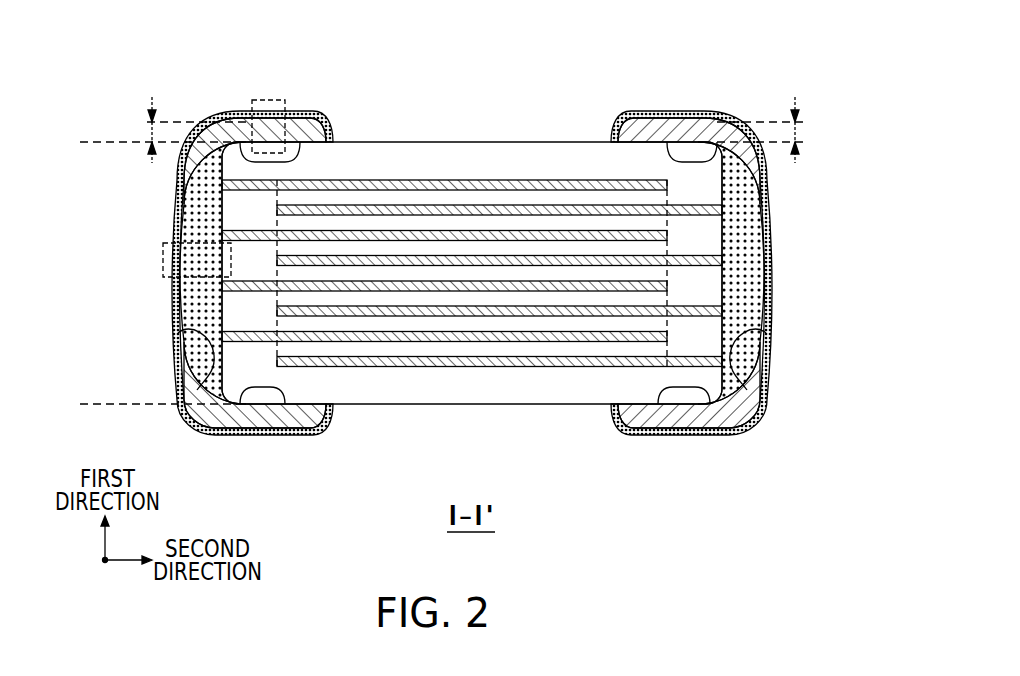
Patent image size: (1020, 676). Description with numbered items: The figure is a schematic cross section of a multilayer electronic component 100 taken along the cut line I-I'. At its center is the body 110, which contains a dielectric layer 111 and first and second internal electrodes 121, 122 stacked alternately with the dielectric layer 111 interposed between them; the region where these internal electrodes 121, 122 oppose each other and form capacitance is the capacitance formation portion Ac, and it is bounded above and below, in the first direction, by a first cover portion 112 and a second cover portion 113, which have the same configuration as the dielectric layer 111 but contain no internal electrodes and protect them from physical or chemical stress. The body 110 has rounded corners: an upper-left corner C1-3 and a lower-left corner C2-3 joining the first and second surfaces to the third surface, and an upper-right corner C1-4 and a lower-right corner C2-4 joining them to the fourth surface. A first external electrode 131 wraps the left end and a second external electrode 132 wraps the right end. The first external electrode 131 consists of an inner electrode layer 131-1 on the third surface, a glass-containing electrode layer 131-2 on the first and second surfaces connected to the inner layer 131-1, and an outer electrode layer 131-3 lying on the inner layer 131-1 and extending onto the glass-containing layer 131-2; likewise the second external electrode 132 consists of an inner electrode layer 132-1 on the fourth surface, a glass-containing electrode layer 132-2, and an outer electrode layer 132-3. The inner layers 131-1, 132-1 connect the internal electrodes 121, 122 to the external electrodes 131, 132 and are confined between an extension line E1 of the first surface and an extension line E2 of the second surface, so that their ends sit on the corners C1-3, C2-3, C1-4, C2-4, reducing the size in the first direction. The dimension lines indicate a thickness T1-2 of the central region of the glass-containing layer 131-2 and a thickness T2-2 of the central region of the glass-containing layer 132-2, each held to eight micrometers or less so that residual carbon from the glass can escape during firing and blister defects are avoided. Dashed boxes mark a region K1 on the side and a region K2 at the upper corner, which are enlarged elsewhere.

The multilayer electronic component 100 is at (195, 37).
The body 110 is at (472, 264).
The dielectric layer 111 is at (372, 200).
The first cover portion 112 is at (483, 153).
The second cover portion 113 is at (476, 388).
The first internal electrode 121 is at (532, 180).
The second internal electrode 122 is at (597, 212).
The first external electrode 131 is at (184, 273).
The 1-1-th electrode layer 131-1 is at (198, 305).
The 1-2-th electrode layer 131-2 is at (182, 345).
The 1-3-th electrode layer 131-3 is at (180, 384).
The second external electrode 132 is at (765, 273).
The 2-1-th electrode layer 132-1 is at (748, 342).
The 2-2-th electrode layer 132-2 is at (763, 393).
The 2-3-th electrode layer 132-3 is at (753, 424).
The capacitance formation portion Ac is at (567, 368).
The region K1 is at (163, 262).
The region K2 is at (264, 100).
The 1-3-th corner C1-3 is at (297, 113).
The 1-4-th corner C1-4 is at (674, 158).
The 2-3-th corner C2-3 is at (283, 392).
The 2-4-th corner C2-4 is at (670, 392).
The extension line of the first surface E1 is at (146, 144).
The extension line of the second surface E2 is at (144, 404).
The thickness of the central region of the 1-2-th electrode layer T1-2 is at (178, 130).
The thickness of the central region of the 2-2-th electrode layer T2-2 is at (780, 130).